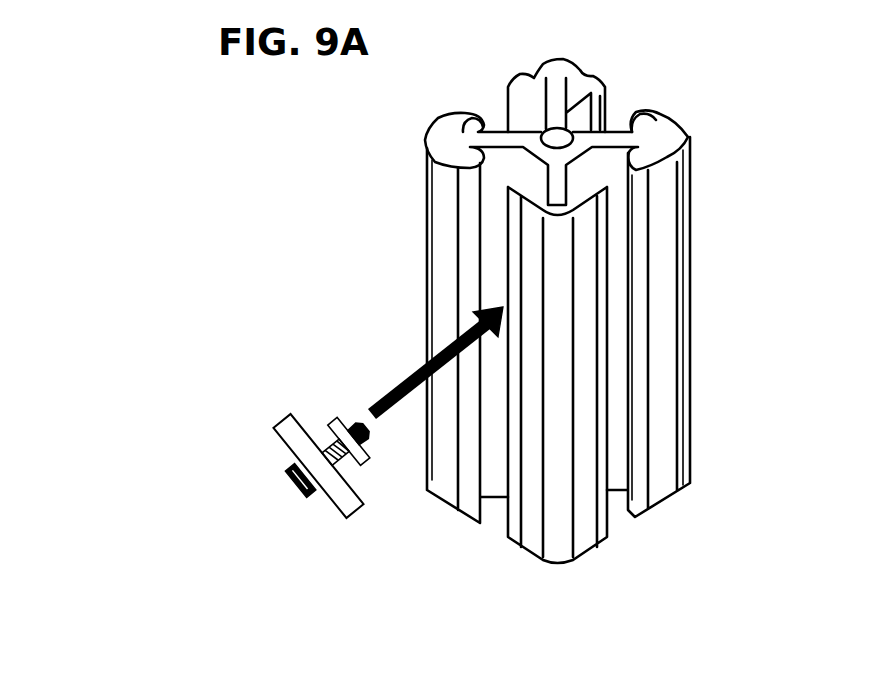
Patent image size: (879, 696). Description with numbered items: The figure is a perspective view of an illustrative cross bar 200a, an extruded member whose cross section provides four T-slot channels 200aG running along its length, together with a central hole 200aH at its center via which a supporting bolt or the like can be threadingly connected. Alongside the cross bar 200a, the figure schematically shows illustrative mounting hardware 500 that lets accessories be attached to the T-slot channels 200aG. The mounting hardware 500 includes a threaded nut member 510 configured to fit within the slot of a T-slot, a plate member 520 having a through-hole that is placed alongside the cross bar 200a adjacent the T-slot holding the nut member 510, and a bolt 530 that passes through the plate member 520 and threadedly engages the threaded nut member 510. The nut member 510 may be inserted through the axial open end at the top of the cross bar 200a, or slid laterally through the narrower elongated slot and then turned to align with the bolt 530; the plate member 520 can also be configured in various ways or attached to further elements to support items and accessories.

The cross bar 200a is at (378, 232).
The central hole 200aH is at (547, 128).
The T-slot channel 200aG is at (613, 102).
The mounting hardware 500 is at (140, 258).
The threaded nut member 510 is at (330, 412).
The plate member 520 is at (275, 413).
The bolt 530 is at (272, 457).